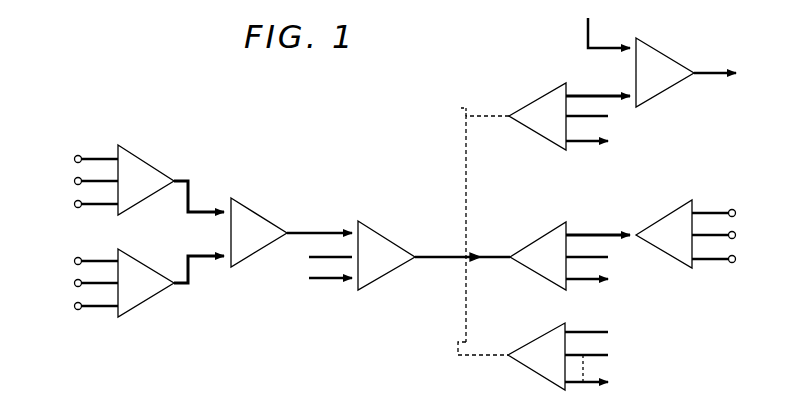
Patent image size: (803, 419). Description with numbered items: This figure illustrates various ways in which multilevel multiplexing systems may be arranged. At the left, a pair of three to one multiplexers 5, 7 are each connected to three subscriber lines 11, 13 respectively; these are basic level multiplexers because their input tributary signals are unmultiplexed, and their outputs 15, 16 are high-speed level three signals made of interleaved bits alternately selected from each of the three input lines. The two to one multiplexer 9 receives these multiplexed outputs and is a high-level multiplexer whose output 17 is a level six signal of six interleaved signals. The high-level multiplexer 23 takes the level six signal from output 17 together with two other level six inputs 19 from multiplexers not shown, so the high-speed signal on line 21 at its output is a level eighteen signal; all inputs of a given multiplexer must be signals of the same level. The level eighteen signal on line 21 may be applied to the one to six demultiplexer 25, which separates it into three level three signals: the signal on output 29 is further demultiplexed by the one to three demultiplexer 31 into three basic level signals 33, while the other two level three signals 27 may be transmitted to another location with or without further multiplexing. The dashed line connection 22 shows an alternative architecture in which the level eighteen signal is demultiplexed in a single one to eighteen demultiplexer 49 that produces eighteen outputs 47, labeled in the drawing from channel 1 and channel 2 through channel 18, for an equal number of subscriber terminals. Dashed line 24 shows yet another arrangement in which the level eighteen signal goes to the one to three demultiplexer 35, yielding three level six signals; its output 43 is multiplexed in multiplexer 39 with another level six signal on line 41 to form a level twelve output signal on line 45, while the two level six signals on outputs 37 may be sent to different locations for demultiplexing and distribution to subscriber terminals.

The 3 to 1 multiplexer 5 is at (148, 162).
The 3 to 1 multiplexer 7 is at (147, 268).
The 2 to 1 multiplexer 9 is at (254, 207).
The subscriber lines 11 is at (64, 168).
The subscriber lines 13 is at (64, 298).
The output 15 is at (199, 258).
The output 16 is at (196, 208).
The output 17 is at (318, 232).
The level 6 inputs 19 is at (300, 275).
The high-speed line 21 is at (430, 259).
The dashed line connection 22 is at (458, 360).
The high-level multiplexer 23 is at (381, 229).
The dashed line 24 is at (457, 108).
The 1 to 6 demultiplexer 25 is at (535, 234).
The level 3 signals 27 is at (641, 277).
The output 29 is at (590, 234).
The 1 to 3 demultiplexer 31 is at (668, 212).
The basic level signals 33 is at (749, 248).
The 1 to 3 demultiplexer 35 is at (541, 97).
The outputs 37 is at (640, 131).
The multiplexer 39 is at (674, 58).
The line 41 is at (591, 36).
The output 43 is at (581, 95).
The line 45 is at (708, 76).
The outputs 47 is at (641, 358).
The 1 to 18 demultiplexer 49 is at (535, 342).
The output channel 1 is at (623, 333).
The output channel 2 is at (623, 356).
The output channel 18 is at (626, 384).